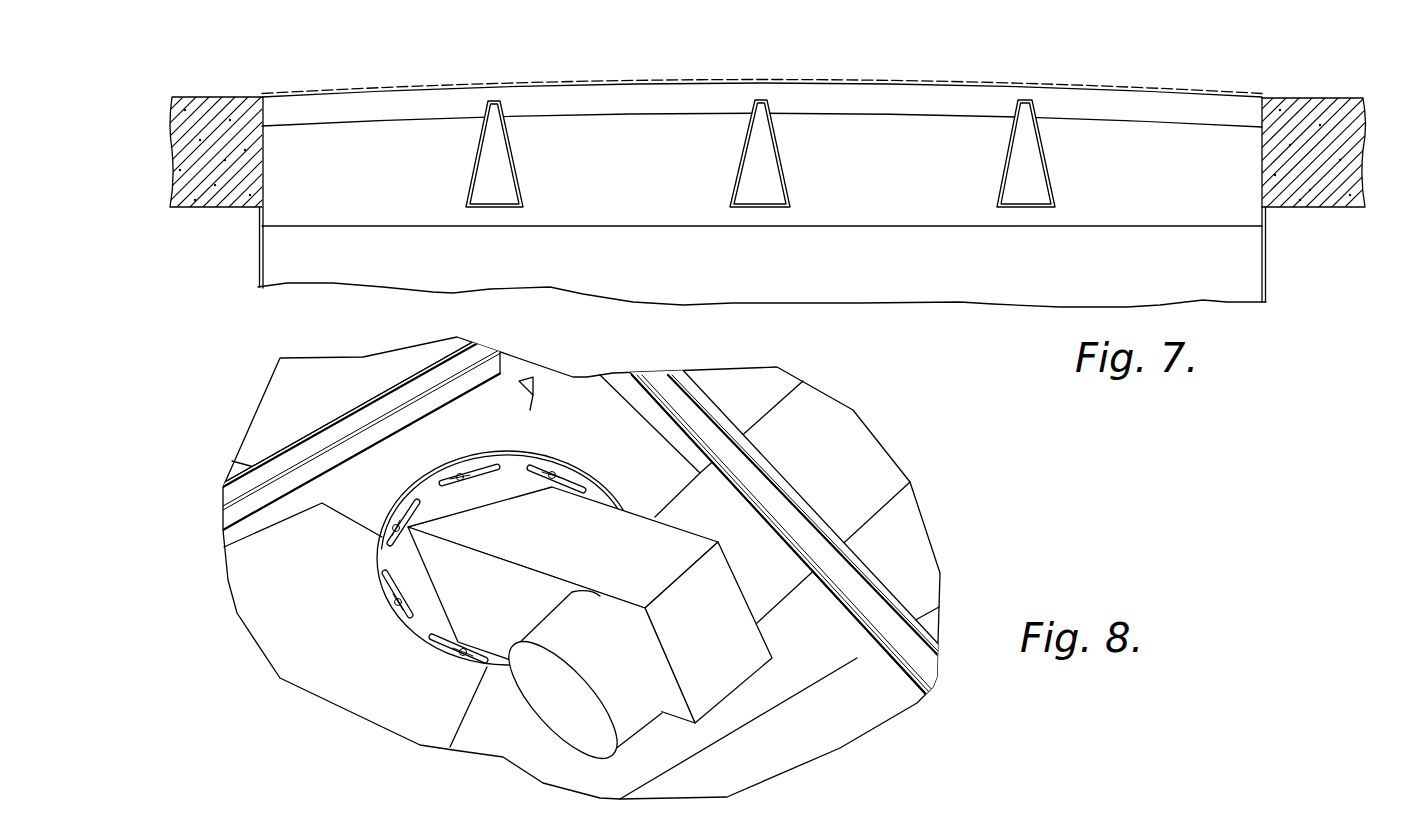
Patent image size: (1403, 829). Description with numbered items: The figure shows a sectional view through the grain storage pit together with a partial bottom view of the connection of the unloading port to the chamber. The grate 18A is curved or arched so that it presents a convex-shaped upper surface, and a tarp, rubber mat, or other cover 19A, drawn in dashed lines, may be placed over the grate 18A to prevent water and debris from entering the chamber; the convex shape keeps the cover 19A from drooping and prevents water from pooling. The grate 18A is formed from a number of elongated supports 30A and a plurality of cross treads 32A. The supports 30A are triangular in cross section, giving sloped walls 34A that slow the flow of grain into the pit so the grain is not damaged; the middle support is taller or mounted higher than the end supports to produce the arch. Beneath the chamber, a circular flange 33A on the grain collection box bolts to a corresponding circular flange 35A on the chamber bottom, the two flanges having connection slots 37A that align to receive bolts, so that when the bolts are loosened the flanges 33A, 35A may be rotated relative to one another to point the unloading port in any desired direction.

In FIG. 7, the grate 18A is at (762, 165).
In FIG. 7, the cover 19A is at (342, 91).
In FIG. 7, the cross treads 32A is at (1145, 103).
In FIG. 7, the elongated supports 30A is at (723, 153).
In FIG. 7, the sloped walls 34A is at (482, 150).
In FIG. 8, the circular flange 33A is at (462, 545).
In FIG. 8, the circular flange 35A is at (542, 463).
In FIG. 8, the connection slots 37A is at (474, 470).